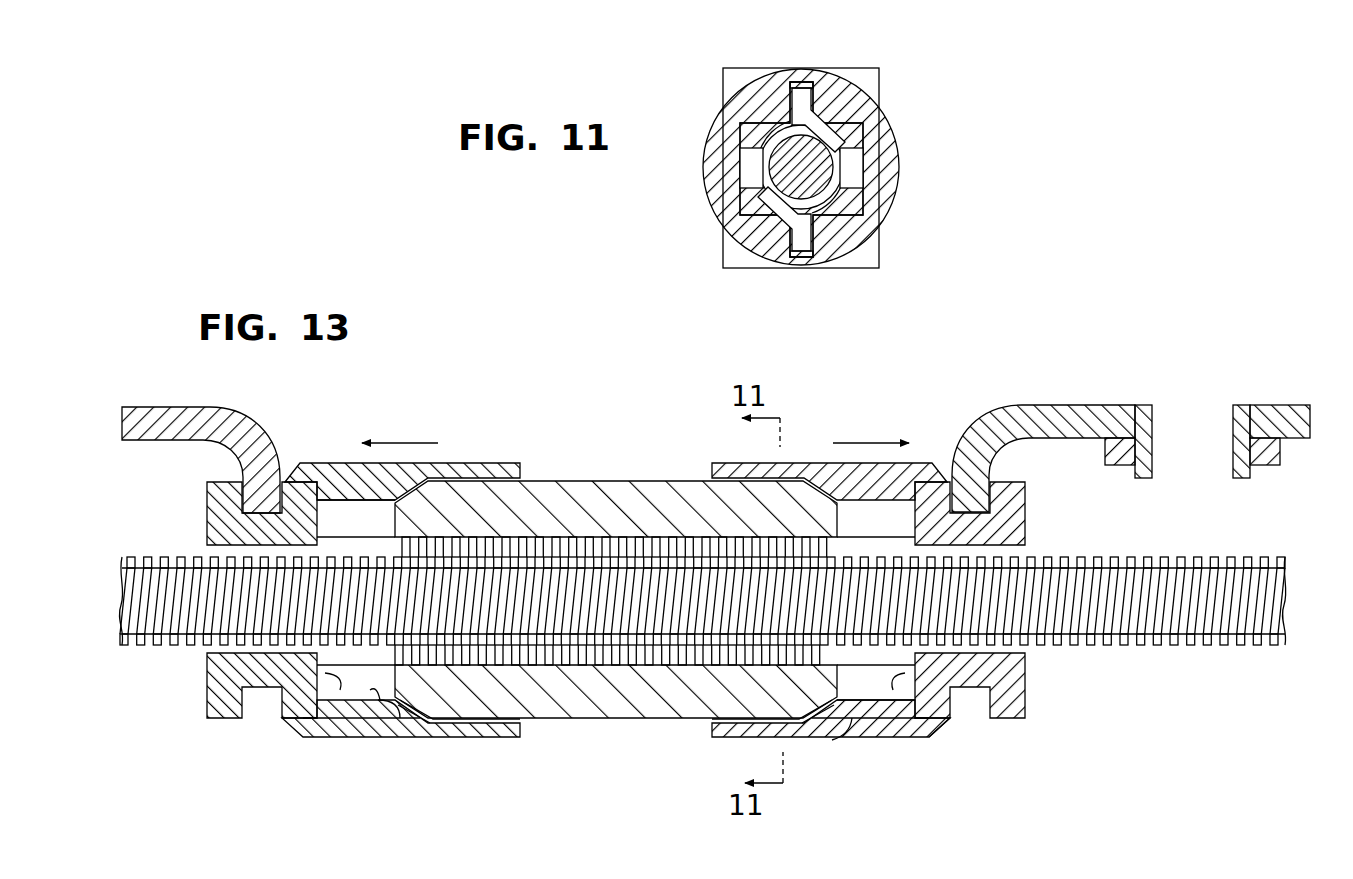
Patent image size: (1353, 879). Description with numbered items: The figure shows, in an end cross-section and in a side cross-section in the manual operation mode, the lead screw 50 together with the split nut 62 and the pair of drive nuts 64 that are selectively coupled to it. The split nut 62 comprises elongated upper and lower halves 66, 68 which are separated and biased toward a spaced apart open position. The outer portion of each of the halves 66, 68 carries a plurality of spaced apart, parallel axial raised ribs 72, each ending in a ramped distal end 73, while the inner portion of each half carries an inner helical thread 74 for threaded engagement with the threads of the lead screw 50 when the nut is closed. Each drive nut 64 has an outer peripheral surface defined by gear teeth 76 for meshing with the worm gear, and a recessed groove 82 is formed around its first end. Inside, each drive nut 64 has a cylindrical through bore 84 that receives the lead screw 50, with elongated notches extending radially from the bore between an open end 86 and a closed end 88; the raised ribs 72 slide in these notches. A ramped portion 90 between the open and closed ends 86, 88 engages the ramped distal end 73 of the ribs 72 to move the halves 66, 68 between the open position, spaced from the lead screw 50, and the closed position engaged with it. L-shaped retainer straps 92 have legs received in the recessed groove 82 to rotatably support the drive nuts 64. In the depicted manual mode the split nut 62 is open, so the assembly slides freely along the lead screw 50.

In FIG. 11, the lead screw 50 is at (783, 170).
In FIG. 13, the lead screw 50 is at (1285, 605).
In FIG. 11, the split nut 62 is at (832, 94).
In FIG. 13, the split nut 62 is at (560, 476).
In FIG. 11, the drive nut 64 is at (907, 163).
In FIG. 13, the drive nut 64 is at (473, 742).
In FIG. 11, the upper half 66 is at (777, 125).
In FIG. 13, the upper half 66 is at (612, 478).
In FIG. 11, the lower half 68 is at (782, 240).
In FIG. 13, the lower half 68 is at (638, 705).
In FIG. 11, the raised ribs 72 is at (800, 86).
In FIG. 13, the raised ribs 72 is at (570, 718).
In FIG. 13, the ramped distal end 73 is at (410, 706).
In FIG. 11, the inner helical thread 74 is at (778, 131).
In FIG. 13, the inner helical thread 74 is at (678, 535).
In FIG. 13, the gear teeth 76 is at (940, 732).
In FIG. 13, the recessed groove 82 is at (250, 712).
In FIG. 11, the through bore 84 is at (792, 84).
In FIG. 13, the through bore 84 is at (377, 690).
In FIG. 13, the open end 86 is at (706, 737).
In FIG. 13, the closed end 88 is at (333, 688).
In FIG. 13, the ramped portion 90 is at (390, 718).
In FIG. 13, the retainer strap 92 is at (150, 405).